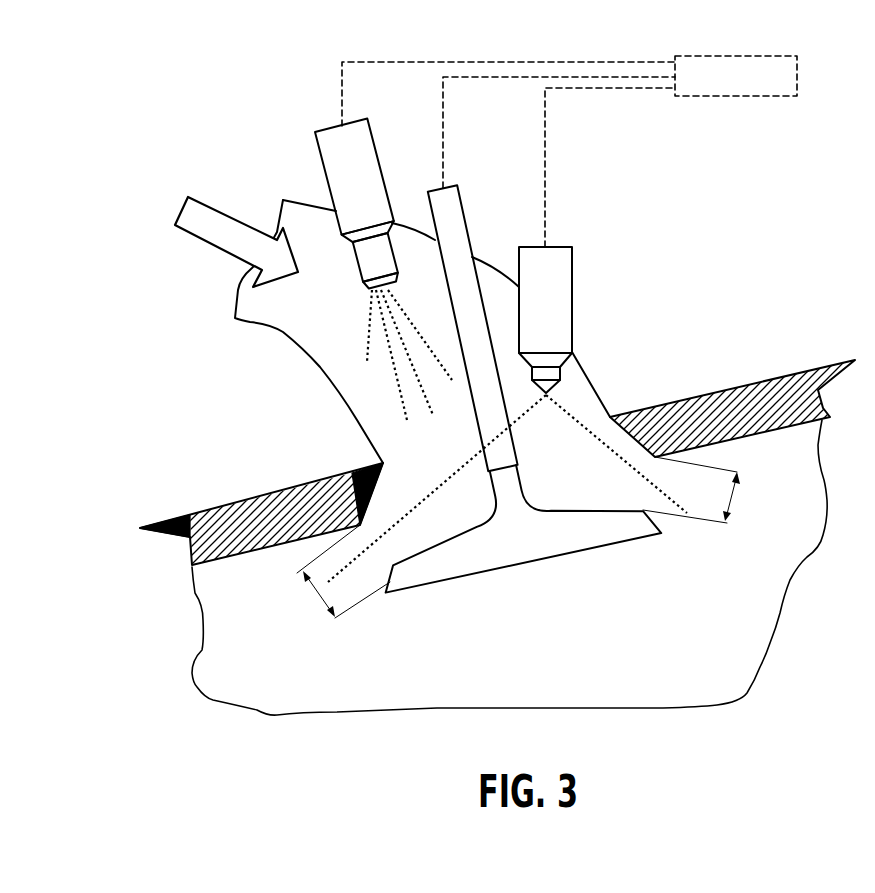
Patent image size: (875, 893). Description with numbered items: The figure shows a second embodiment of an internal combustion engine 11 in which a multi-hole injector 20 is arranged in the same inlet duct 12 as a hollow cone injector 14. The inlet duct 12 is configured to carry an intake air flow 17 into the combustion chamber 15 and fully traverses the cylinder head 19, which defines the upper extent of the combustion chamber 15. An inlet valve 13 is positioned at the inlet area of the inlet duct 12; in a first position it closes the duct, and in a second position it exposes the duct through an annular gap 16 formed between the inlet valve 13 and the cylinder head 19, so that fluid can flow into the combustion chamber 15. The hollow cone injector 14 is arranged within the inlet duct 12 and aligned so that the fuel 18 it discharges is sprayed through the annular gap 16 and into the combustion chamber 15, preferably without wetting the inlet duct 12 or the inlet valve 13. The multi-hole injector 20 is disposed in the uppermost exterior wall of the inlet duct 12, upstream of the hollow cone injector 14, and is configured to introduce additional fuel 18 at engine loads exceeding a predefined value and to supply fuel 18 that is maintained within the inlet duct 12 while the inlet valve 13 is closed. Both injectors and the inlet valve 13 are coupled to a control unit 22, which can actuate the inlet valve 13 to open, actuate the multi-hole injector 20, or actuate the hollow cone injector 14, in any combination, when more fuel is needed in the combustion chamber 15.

The internal combustion engine 11 is at (209, 98).
The inlet duct 12 is at (285, 340).
The inlet valve 13 is at (562, 556).
The hollow cone injector 14 is at (573, 260).
The combustion chamber 15 is at (470, 674).
The annular gap 16 is at (315, 593).
The intake air flow 17 is at (217, 251).
The fuel 18 is at (367, 362).
The cylinder head 19 is at (757, 382).
The multi-hole injector 20 is at (323, 168).
The control unit 22 is at (725, 90).